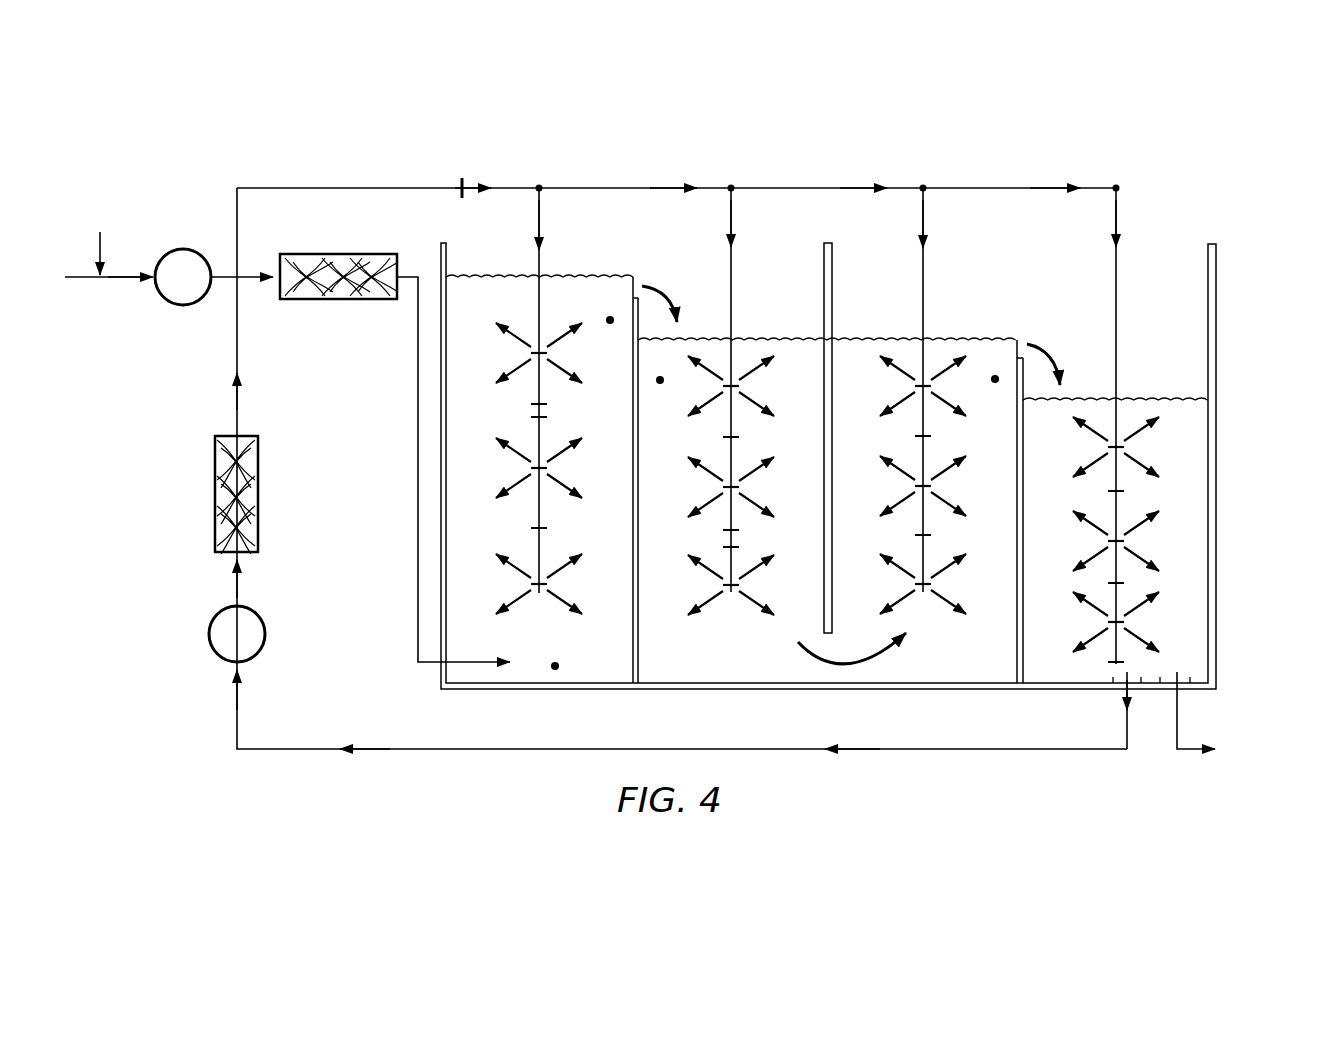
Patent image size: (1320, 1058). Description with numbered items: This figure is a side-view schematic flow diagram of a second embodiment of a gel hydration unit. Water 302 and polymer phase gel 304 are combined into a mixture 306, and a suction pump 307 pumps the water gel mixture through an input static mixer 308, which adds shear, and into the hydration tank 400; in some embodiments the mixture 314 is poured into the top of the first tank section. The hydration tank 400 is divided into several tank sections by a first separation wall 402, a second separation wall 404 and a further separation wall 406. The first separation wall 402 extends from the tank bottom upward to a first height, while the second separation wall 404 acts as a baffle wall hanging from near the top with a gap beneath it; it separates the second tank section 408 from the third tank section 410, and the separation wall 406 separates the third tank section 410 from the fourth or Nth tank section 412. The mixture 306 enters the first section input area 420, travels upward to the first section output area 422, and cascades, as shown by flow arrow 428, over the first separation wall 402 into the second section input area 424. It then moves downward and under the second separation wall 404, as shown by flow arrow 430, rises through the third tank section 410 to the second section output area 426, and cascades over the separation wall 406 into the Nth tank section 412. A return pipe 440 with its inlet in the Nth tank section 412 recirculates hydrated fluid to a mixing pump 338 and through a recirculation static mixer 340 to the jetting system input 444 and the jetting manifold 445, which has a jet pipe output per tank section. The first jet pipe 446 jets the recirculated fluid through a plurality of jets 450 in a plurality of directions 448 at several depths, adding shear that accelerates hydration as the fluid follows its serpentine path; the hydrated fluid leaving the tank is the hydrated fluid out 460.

The water 302 is at (79, 265).
The polymer phase gel 304 is at (100, 227).
The mixture 306 is at (122, 279).
The suction pump 307 is at (183, 249).
The input static mixer 308 is at (338, 254).
The mixture 314 is at (418, 595).
The mixing pump 338 is at (209, 640).
The recirculation static mixer 340 is at (214, 500).
The hydration tank 400 is at (1217, 300).
The first separation wall 402 is at (638, 638).
The second separation wall 404 is at (832, 290).
The separation wall / first tank section 406 is at (609, 668).
The second tank section 408 is at (744, 670).
The third tank section 410 is at (977, 670).
The fourth or Nth tank section 412 is at (1073, 670).
The first section input area 420 is at (555, 666).
The first section output area 422 is at (610, 320).
The second section input area 424 is at (660, 380).
The second section output area 426 is at (995, 379).
The flow arrow 428 is at (688, 276).
The flow arrow 430 is at (843, 666).
The return pipe 440 is at (302, 749).
The jetting system input 444 is at (393, 188).
The jetting manifold 445 is at (790, 188).
The first jet pipe 446 is at (538, 217).
The hydration fluid jets 448 is at (516, 339).
The jets 450 is at (530, 417).
The hydrated fluid outlet 460 is at (1177, 737).